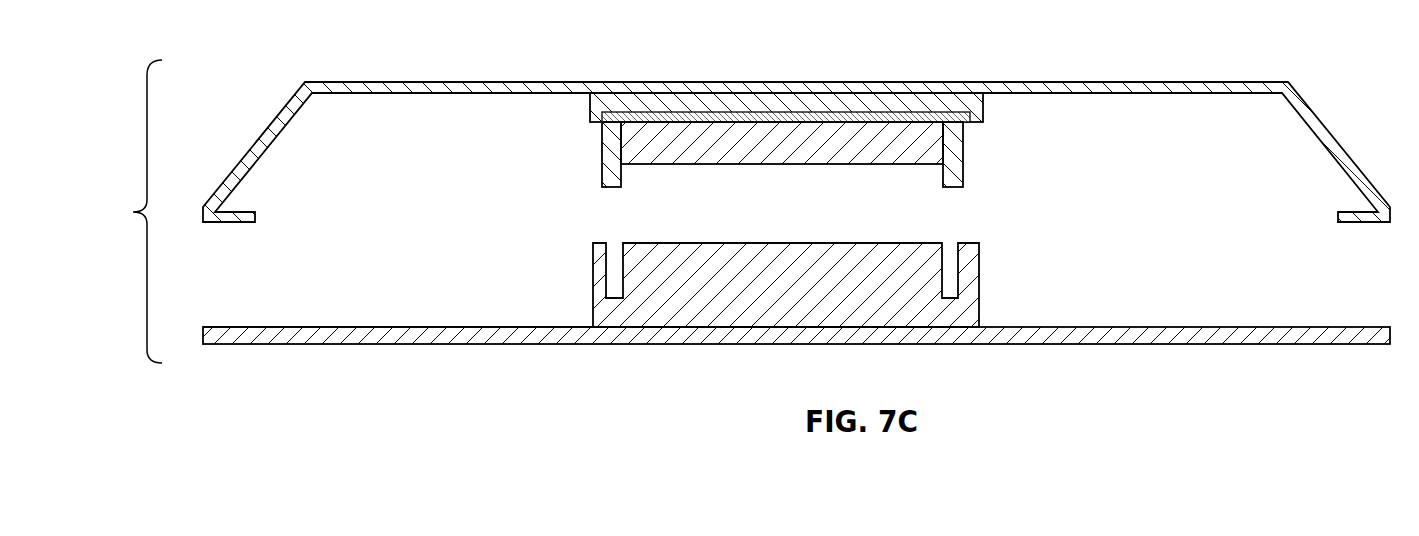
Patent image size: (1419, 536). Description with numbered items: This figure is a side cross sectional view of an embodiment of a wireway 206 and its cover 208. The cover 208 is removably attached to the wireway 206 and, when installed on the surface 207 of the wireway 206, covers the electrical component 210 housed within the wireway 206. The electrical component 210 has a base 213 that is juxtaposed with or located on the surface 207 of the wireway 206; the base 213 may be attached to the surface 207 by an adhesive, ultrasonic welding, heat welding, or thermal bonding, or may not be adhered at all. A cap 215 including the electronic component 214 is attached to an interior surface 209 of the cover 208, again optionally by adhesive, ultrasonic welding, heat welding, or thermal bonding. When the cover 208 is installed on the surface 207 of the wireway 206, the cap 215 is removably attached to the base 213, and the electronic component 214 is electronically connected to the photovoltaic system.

The wireway 206 is at (1260, 327).
The surface 207 is at (302, 327).
The cover 208 is at (1205, 82).
The interior surface 209 is at (370, 93).
The electrical component 210 is at (982, 147).
The base 213 is at (948, 317).
The electronic component 214 is at (810, 138).
The cap 215 is at (745, 97).